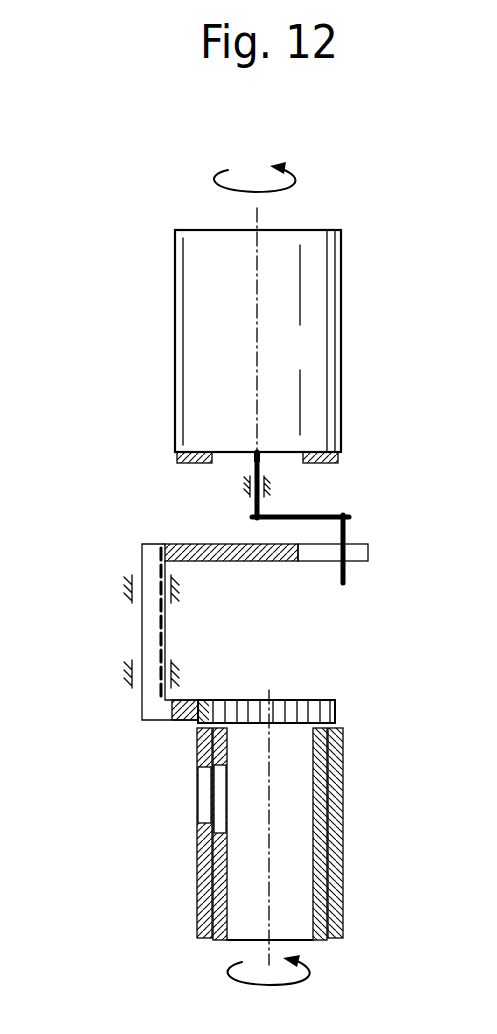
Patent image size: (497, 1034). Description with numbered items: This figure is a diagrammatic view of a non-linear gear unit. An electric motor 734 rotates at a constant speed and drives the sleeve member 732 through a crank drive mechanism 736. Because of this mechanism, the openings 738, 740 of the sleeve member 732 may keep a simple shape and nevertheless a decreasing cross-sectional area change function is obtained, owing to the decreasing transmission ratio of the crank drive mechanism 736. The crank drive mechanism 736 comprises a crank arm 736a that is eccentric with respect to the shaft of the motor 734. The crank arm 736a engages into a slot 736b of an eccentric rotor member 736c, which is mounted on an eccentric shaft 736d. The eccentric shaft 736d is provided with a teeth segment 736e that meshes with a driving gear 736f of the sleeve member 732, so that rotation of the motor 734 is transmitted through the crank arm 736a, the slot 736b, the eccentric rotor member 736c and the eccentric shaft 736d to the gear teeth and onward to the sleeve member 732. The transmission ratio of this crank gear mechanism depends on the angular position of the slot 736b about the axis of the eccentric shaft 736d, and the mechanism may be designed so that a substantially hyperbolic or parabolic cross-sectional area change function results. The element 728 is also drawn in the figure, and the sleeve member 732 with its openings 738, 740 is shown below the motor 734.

The electric motor 734 is at (314, 341).
The crank drive mechanism 736 is at (245, 606).
The crank arm 736a is at (347, 532).
The slot 736b is at (321, 553).
The eccentric rotor member 736c is at (217, 548).
The eccentric shaft 736d is at (150, 628).
The teeth segment 736e is at (196, 714).
The driving gear 736f is at (288, 698).
The opening 740 is at (206, 779).
The opening 738 is at (222, 805).
The outer cylinder wall 728 is at (204, 872).
The sleeve member 732 is at (226, 940).